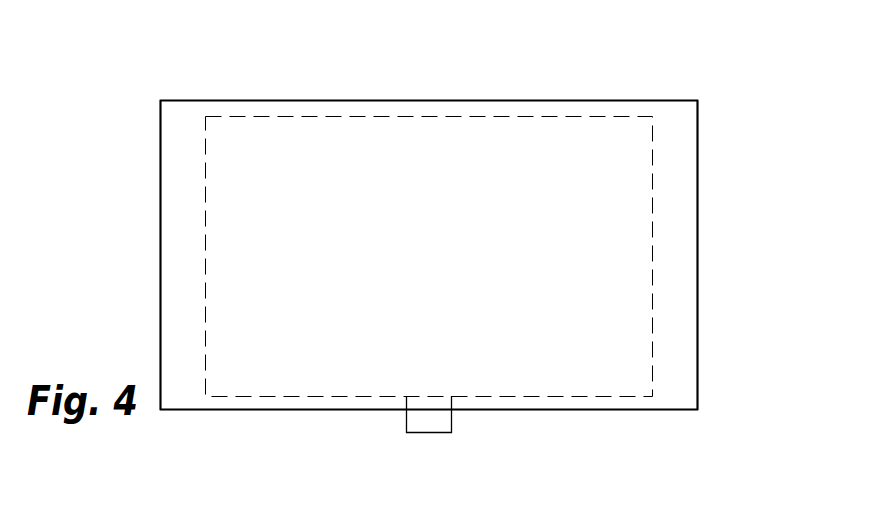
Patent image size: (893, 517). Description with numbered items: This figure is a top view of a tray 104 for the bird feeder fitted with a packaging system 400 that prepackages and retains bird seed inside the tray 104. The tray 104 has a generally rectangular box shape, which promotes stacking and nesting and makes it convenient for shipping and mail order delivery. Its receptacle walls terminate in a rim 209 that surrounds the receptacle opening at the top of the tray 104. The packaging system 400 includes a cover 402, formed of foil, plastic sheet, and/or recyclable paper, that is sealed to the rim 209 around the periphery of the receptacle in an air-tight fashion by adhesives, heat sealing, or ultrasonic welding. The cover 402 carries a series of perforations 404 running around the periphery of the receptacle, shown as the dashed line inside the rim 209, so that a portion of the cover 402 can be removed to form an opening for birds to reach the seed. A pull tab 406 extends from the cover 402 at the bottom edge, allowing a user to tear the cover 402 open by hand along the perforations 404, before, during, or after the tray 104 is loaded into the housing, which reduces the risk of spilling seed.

The packaging system 400 is at (190, 73).
The tray 104 is at (703, 317).
The rim 209 is at (323, 100).
The perforations 404 is at (181, 210).
The cover 402 is at (675, 210).
The pull tab 406 is at (426, 421).